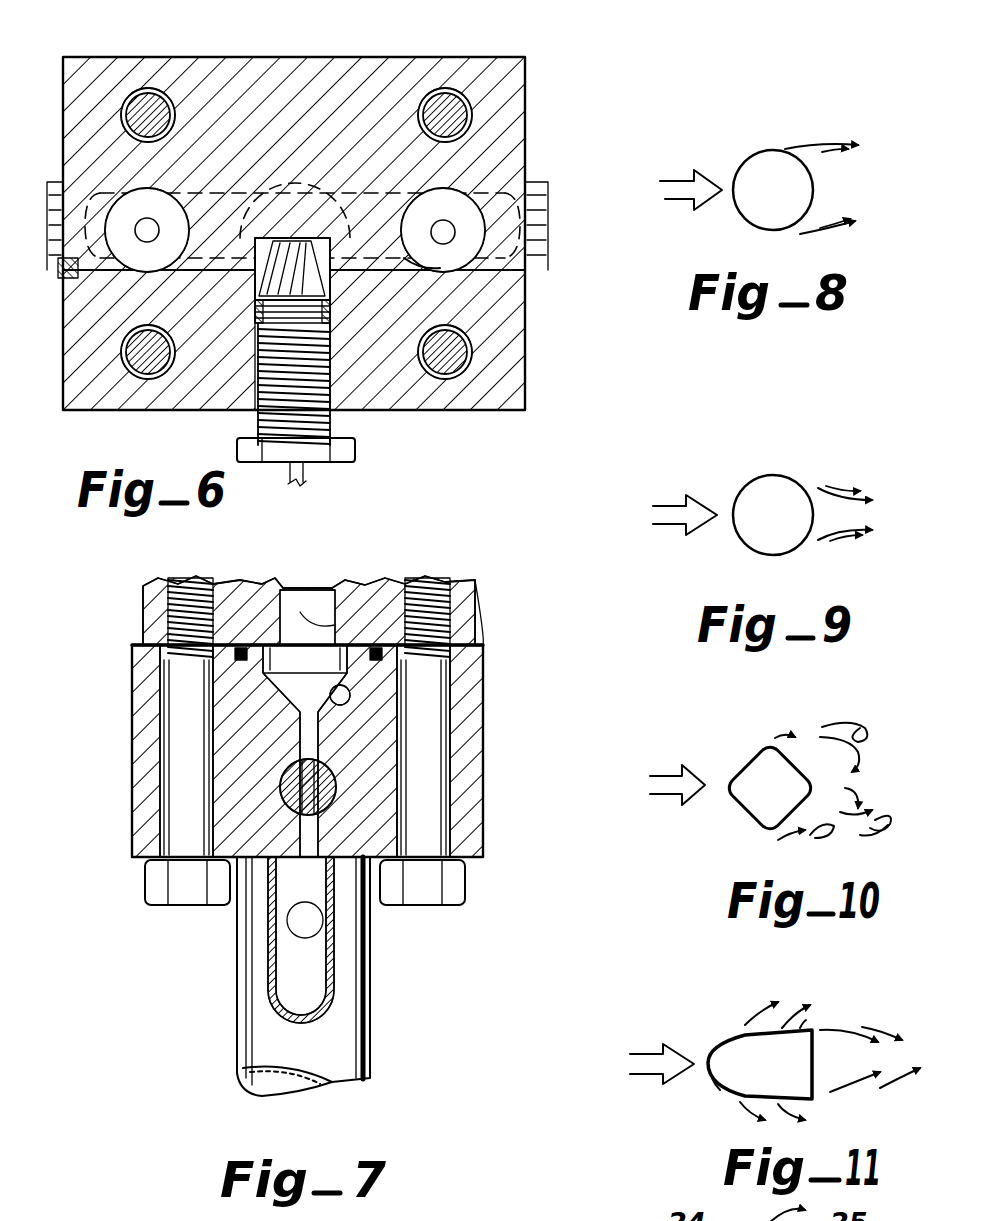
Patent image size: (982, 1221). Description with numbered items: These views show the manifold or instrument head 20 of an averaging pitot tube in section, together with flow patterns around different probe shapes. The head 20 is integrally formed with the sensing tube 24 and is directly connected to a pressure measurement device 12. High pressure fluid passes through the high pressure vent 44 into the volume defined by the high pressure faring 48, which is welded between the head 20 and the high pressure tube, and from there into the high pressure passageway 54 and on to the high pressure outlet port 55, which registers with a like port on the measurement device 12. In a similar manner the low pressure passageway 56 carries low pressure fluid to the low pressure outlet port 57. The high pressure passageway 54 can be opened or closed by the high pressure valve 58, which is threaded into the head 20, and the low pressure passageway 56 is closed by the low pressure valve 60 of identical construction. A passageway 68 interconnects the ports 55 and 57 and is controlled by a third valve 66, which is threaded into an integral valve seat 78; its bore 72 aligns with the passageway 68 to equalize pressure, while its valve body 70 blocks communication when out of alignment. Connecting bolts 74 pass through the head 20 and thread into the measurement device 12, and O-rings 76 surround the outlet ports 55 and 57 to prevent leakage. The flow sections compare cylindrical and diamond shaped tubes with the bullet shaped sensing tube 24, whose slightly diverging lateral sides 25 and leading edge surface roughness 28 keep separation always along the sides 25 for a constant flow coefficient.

In FIG. 7, the pressure measurement device 12 is at (466, 600).
In FIG. 6, the manifold head 20 is at (525, 60).
In FIG. 7, the manifold head 20 is at (484, 740).
In FIG. 11, the sensing tube 24 is at (740, 1038).
In FIG. 11, the lateral sides 25 is at (776, 1030).
In FIG. 11, the leading edge surface roughness 28 is at (706, 1080).
In FIG. 7, the high pressure vent 44 is at (308, 928).
In FIG. 7, the high pressure faring 48 is at (369, 1006).
In FIG. 6, the high pressure passageway 54 is at (150, 232).
In FIG. 7, the high pressure passageway 54 is at (308, 824).
In FIG. 6, the high pressure outlet port 55 is at (122, 196).
In FIG. 7, the high pressure outlet port 55 is at (335, 610).
In FIG. 6, the low pressure passageway 56 is at (447, 232).
In FIG. 6, the low pressure outlet port 57 is at (418, 250).
In FIG. 6, the high pressure valve 58 is at (58, 272).
In FIG. 7, the high pressure valve 58 is at (305, 660).
In FIG. 6, the low pressure valve 60 is at (546, 205).
In FIG. 6, the third valve 66 is at (305, 480).
In FIG. 6, the passageway 68 is at (445, 272).
In FIG. 7, the passageway 68 is at (352, 648).
In FIG. 6, the valve body 70 is at (327, 300).
In FIG. 6, the bore 72 is at (300, 240).
In FIG. 6, the connecting bolts 74 is at (147, 115).
In FIG. 7, the connecting bolts 74 is at (192, 906).
In FIG. 7, the O-rings 76 is at (390, 600).
In FIG. 6, the threaded integral valve seat 78 is at (345, 452).